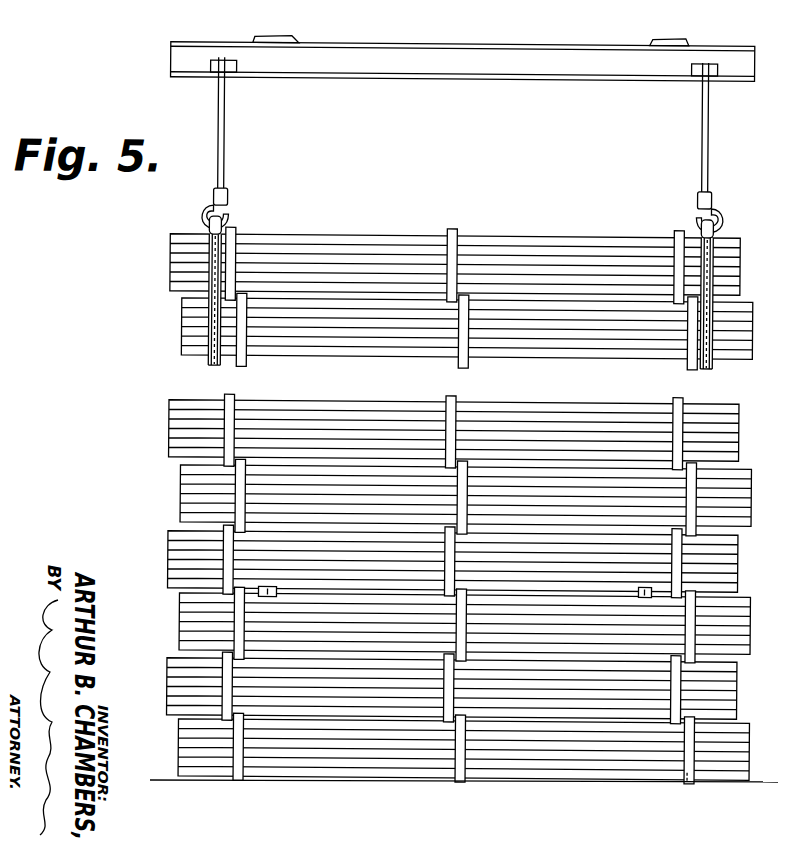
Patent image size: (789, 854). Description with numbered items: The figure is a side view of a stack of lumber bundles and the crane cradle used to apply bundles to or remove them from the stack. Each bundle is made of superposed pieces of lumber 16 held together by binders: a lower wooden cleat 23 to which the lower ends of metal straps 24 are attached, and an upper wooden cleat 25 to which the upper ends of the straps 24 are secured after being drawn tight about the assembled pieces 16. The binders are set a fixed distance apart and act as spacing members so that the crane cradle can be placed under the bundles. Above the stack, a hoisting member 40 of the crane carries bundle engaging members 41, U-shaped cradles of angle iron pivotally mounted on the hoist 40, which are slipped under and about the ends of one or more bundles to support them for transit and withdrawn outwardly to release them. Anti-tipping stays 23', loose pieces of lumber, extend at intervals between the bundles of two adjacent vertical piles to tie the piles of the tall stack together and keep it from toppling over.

The pieces of lumber 16 is at (543, 364).
The lower cleat 23 is at (710, 679).
The anti-tipping stay 23' is at (201, 579).
The metal strap 24 is at (463, 766).
The upper cleat 25 is at (692, 714).
The hoisting member 40 is at (446, 77).
The bundle engaging member 41 is at (208, 233).